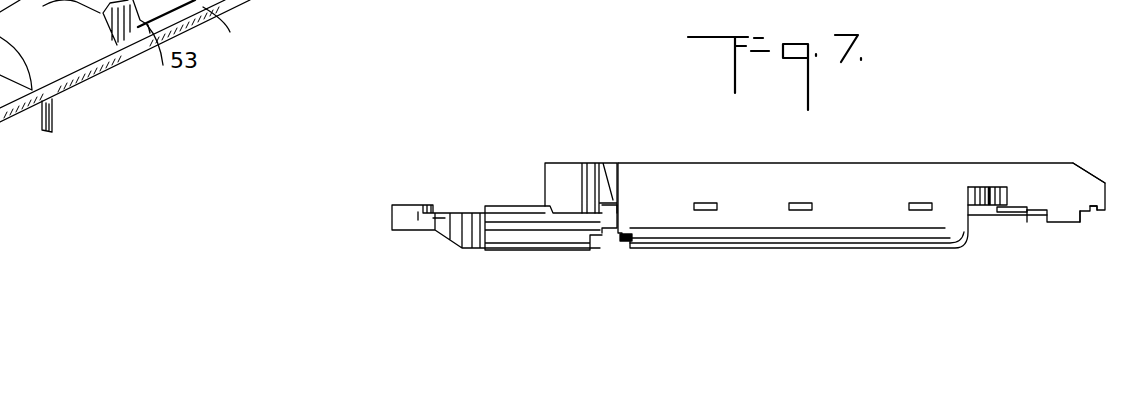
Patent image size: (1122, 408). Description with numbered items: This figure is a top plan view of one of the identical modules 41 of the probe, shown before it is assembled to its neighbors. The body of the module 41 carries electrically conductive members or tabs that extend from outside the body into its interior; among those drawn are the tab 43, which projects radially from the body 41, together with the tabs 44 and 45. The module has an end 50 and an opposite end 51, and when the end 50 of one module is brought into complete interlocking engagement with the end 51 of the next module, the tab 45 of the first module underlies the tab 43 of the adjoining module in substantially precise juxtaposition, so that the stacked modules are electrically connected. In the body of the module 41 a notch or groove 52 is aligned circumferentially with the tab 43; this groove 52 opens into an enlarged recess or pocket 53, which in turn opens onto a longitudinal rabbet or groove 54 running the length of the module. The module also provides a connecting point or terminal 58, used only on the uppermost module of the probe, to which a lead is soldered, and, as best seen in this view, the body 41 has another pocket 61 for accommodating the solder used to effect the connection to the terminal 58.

The module 41 is at (852, 210).
The conductive tab 43 is at (609, 198).
The conductive tab 44 is at (55, 114).
The conductive tab 45 is at (1095, 215).
The end of module 50 is at (1057, 165).
The end of module 51 is at (500, 250).
The notch or groove 52 is at (612, 216).
The recess or pocket 53 is at (632, 237).
The longitudinal rabbet or groove 54 is at (232, 24).
The connecting point or terminal 58 is at (998, 215).
The pocket 61 is at (982, 196).